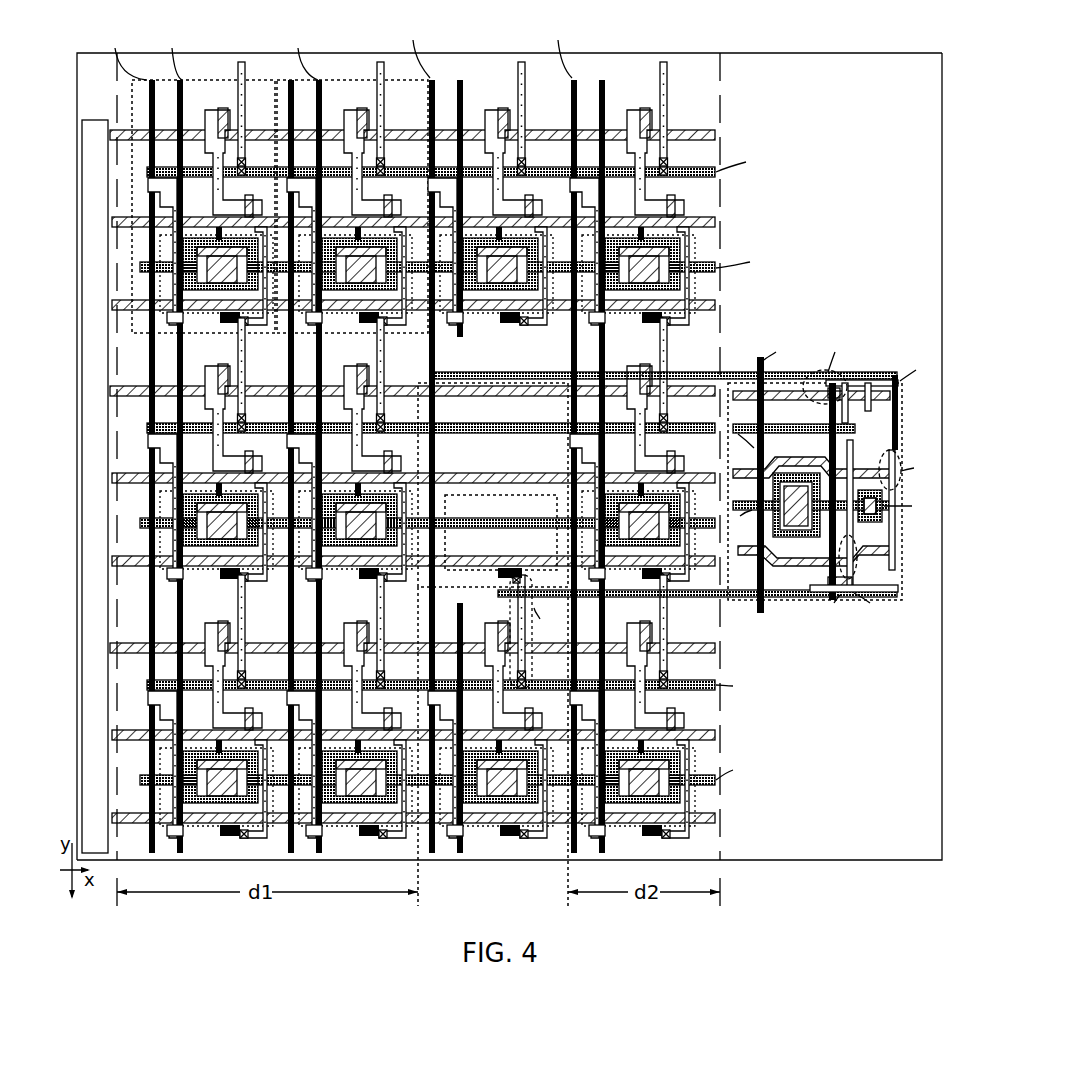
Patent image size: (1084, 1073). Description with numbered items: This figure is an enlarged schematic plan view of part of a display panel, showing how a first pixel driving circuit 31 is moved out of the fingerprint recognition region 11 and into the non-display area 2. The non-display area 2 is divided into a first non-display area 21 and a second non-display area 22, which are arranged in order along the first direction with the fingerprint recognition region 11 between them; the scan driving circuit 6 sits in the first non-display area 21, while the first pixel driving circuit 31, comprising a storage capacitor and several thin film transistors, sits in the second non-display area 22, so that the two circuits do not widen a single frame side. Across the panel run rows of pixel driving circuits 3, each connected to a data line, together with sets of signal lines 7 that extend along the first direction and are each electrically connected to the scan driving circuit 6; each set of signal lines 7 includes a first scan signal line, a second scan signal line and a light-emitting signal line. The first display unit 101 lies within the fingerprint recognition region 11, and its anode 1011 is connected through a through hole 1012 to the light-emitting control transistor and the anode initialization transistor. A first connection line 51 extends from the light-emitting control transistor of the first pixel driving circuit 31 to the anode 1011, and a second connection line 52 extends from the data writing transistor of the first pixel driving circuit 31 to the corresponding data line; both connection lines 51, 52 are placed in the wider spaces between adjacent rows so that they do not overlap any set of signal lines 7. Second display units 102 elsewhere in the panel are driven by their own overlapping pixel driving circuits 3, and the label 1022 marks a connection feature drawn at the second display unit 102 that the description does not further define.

The non-display area 2 is at (498, 438).
The first non-display area 21 is at (80, 58).
The second non-display area 22 is at (848, 78).
The pixel driving circuit 3 is at (343, 78).
The scan driving circuit 6 is at (94, 120).
The set of signal lines 7 is at (716, 561).
The second display unit 102 is at (203, 315).
The connection contact 1022 is at (240, 325).
The second connection line 52 is at (727, 375).
The first connection line 51 is at (690, 597).
The fingerprint recognition region 11 is at (493, 535).
The first display unit 101 is at (516, 496).
The anode 1011 is at (501, 525).
The through hole 1012 is at (499, 572).
The first pixel driving circuit 31 is at (893, 602).